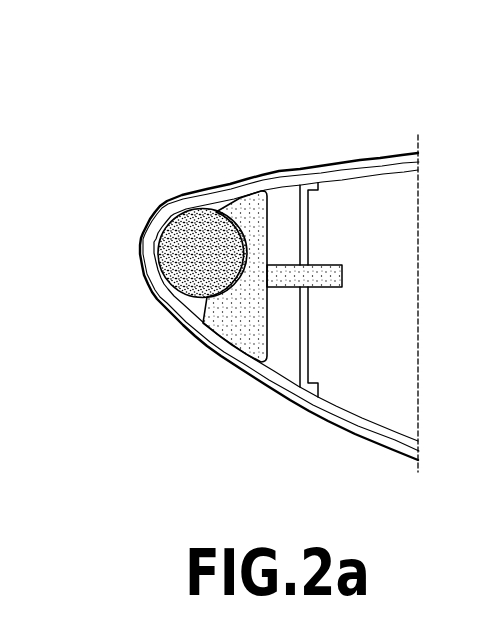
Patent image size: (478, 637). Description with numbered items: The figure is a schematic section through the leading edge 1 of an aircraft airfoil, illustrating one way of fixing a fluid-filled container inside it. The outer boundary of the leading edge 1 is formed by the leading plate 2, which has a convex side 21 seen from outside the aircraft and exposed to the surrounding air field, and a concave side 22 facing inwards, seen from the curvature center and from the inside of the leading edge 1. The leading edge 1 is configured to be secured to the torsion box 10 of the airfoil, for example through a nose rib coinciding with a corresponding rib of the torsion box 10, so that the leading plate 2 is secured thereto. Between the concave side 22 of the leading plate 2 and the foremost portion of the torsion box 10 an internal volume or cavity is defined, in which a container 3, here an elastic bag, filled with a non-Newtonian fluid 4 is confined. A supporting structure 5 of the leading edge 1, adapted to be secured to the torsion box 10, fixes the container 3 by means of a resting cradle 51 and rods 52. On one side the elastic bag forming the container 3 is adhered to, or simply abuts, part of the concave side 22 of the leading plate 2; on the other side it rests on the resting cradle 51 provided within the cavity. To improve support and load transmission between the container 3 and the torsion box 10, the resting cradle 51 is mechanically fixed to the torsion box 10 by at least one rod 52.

The leading edge 1 is at (150, 176).
The leading plate 2 is at (139, 242).
The convex side 21 is at (195, 353).
The concave side 22 is at (173, 325).
The container 3 is at (257, 190).
The non-Newtonian fluid 4 is at (191, 208).
The supporting structure 5 is at (281, 318).
The resting cradle 51 is at (250, 327).
The rod 52 is at (286, 232).
The torsion box 10 is at (377, 210).